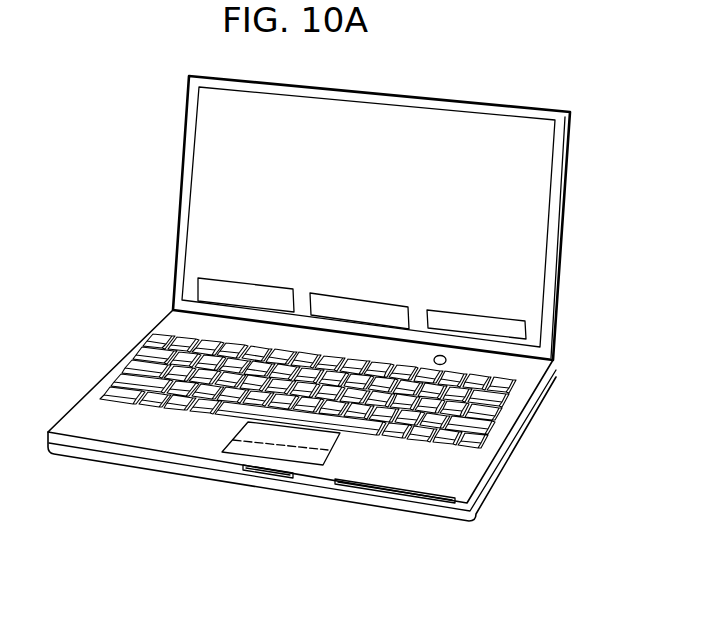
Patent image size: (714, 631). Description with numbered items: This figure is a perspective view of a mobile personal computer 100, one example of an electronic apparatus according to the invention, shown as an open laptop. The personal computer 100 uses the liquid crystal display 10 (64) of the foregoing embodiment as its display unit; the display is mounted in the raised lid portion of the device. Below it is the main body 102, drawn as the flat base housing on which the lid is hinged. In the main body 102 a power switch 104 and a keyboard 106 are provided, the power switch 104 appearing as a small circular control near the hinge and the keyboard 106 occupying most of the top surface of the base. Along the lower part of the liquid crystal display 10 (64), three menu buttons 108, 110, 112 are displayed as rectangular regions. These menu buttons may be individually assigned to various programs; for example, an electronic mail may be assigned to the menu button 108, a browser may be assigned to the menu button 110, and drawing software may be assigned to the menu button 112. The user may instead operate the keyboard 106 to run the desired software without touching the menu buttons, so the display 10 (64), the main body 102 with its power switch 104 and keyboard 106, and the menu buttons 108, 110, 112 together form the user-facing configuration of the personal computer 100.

The mobile personal computer 100 is at (150, 194).
The liquid crystal display 10 is at (377, 160).
The liquid crystal display 64 is at (371, 196).
The main body 102 is at (95, 457).
The power switch 104 is at (447, 359).
The keyboard 106 is at (518, 426).
The menu button 108 is at (253, 293).
The menu button 110 is at (362, 311).
The menu button 112 is at (480, 323).